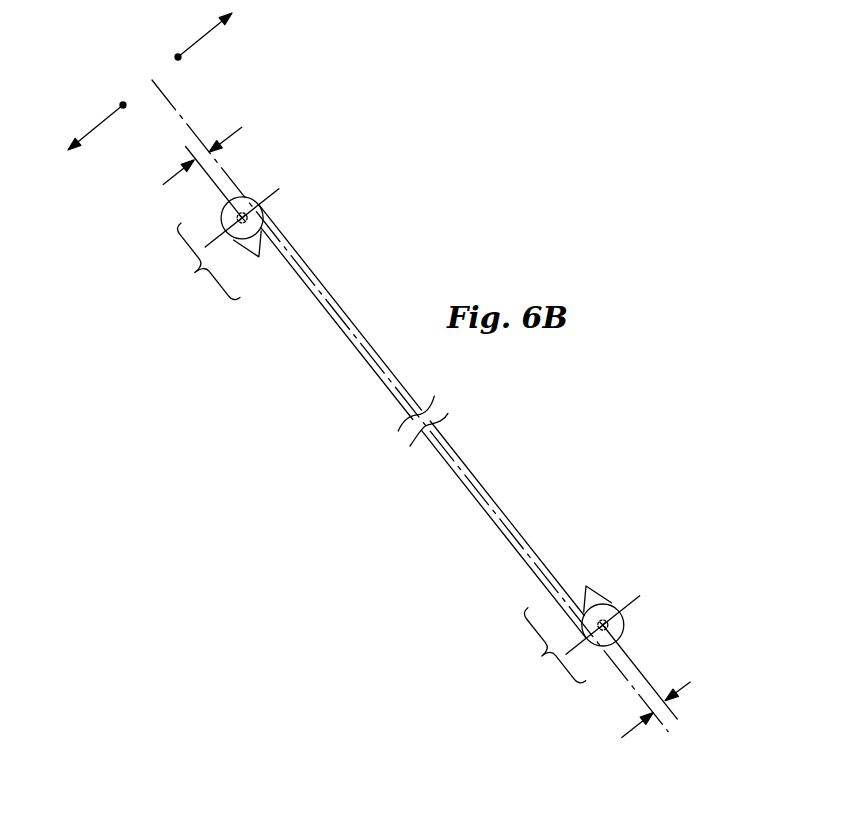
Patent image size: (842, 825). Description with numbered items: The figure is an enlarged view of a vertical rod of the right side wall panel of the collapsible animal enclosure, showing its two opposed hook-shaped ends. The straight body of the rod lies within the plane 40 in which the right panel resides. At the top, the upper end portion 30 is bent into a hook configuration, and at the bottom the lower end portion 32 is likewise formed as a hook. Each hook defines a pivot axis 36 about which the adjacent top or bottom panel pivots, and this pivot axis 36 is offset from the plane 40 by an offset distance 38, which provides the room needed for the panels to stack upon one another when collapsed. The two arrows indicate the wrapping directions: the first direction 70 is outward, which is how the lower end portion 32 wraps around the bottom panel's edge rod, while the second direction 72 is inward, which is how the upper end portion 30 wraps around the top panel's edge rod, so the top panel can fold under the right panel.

The upper end portion 30 is at (203, 261).
The lower end portion 32 is at (549, 645).
The pivot axis 36 is at (241, 212).
The offset distance 38 is at (242, 127).
The plane 40 is at (491, 527).
The first direction 70 is at (203, 37).
The second direction 72 is at (108, 118).